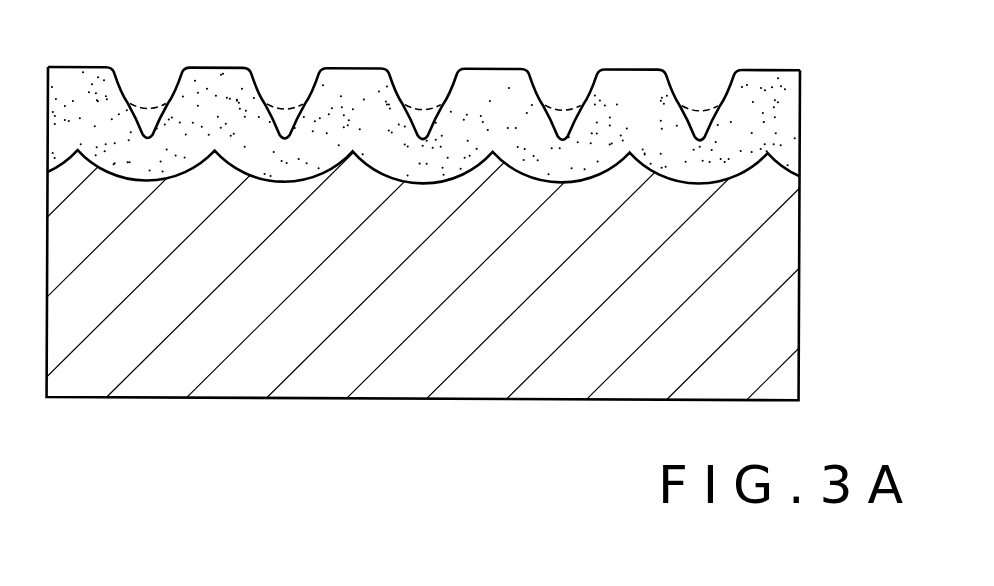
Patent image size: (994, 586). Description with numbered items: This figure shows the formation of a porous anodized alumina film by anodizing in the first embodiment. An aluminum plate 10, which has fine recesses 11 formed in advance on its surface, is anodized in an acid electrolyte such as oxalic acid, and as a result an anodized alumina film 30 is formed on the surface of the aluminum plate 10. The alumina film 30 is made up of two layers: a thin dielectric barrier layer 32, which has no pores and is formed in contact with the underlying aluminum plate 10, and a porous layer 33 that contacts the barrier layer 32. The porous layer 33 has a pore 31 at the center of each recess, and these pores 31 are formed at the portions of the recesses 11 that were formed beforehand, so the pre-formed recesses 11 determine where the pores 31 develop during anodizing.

The aluminum plate 10 is at (775, 250).
The fine recess 11 is at (708, 108).
The anodized alumina film 30 is at (480, 126).
The pore 31 is at (696, 112).
The barrier layer 32 is at (452, 159).
The porous layer 33 is at (818, 71).